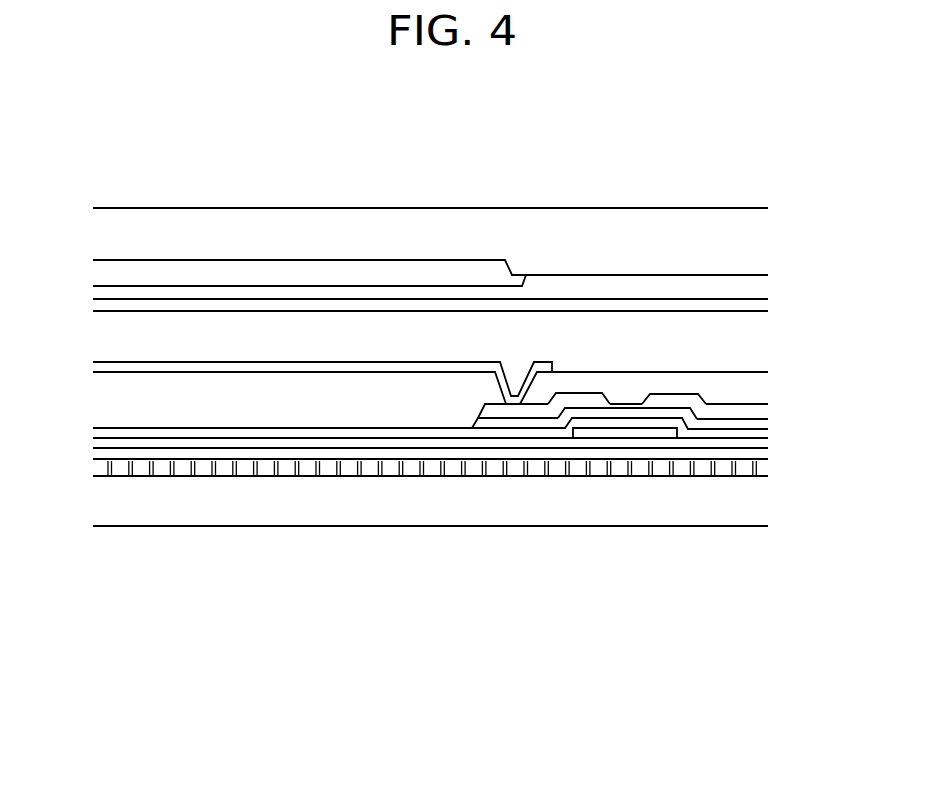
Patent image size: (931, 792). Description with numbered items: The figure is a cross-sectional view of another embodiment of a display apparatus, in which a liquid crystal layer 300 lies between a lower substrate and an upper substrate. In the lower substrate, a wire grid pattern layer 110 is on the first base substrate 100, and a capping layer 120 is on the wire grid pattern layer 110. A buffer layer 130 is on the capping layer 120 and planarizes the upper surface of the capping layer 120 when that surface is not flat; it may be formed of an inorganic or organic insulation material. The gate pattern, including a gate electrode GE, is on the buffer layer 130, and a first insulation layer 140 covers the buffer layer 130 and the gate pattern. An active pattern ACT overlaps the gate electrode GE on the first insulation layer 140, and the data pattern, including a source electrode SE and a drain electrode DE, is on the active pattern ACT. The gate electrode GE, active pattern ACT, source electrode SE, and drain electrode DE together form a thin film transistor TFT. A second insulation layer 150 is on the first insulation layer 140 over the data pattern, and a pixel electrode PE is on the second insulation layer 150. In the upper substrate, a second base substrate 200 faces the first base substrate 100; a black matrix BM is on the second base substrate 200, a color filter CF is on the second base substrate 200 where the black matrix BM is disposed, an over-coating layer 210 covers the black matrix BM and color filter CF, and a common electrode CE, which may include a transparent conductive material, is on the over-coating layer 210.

The second base substrate 200 is at (758, 234).
The black matrix BM is at (758, 268).
The color filter CF is at (102, 270).
The over-coating layer 210 is at (758, 288).
The common electrode CE is at (758, 307).
The liquid crystal layer 300 is at (758, 343).
The pixel electrode PE is at (266, 368).
The second insulation layer 150 is at (760, 388).
The drain electrode DE is at (512, 412).
The source electrode SE is at (718, 410).
The active pattern ACT is at (593, 412).
The first insulation layer 140 is at (762, 437).
The gate electrode GE is at (635, 435).
The buffer layer 130 is at (757, 449).
The capping layer 120 is at (755, 459).
The wire grid pattern layer 110 is at (760, 475).
The first base substrate 100 is at (758, 518).
The thin film transistor TFT is at (738, 585).